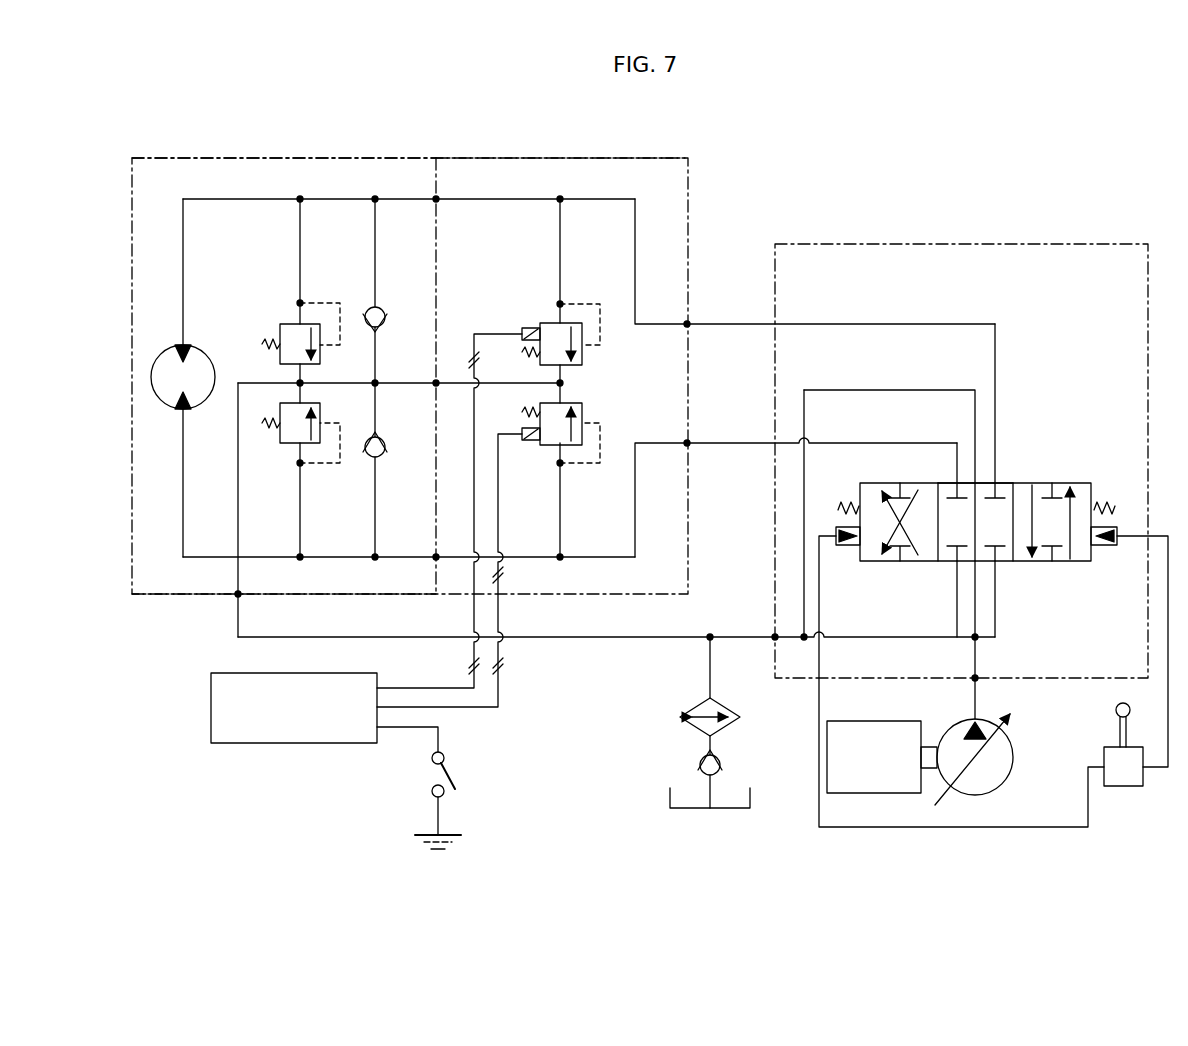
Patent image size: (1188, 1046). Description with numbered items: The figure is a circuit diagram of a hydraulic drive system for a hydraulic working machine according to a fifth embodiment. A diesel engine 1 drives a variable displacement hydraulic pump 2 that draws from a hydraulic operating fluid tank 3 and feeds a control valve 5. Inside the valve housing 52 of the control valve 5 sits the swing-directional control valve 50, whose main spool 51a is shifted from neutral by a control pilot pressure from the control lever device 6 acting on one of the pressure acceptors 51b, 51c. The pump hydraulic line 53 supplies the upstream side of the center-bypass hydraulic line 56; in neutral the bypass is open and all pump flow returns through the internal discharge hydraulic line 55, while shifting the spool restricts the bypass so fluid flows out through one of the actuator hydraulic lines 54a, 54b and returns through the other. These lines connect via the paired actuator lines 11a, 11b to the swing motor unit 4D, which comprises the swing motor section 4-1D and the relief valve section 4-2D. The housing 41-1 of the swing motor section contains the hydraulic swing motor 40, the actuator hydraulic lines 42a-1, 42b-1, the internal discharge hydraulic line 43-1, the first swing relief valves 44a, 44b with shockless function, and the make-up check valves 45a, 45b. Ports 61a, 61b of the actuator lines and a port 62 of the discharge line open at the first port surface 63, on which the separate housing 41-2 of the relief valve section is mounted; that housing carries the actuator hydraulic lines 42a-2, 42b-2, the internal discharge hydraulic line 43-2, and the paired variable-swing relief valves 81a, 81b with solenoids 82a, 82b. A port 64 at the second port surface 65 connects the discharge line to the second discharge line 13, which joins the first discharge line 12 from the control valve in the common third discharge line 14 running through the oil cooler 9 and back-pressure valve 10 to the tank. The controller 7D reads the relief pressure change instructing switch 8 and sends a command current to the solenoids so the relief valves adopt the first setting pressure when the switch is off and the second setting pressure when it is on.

The diesel engine 1 is at (893, 721).
The variable displacement hydraulic pump 2 is at (1014, 758).
The hydraulic operating fluid tank 3 is at (752, 796).
The swing motor unit 4D is at (456, 153).
The swing motor section 4-1D is at (182, 158).
The relief valve section 4-2D is at (612, 158).
The control valve 5 is at (1062, 244).
The control lever device 6 is at (1145, 782).
The controller 7D is at (315, 745).
The relief pressure change instructing switch 8 is at (450, 780).
The oil cooler 9 is at (730, 707).
The back-pressure valve 10 is at (722, 765).
The actuator line 11a is at (736, 323).
The actuator line 11b is at (736, 442).
The first discharge line 12 is at (738, 636).
The second discharge line 13 is at (394, 640).
The third discharge line 14 is at (712, 663).
The hydraulic swing motor 40 is at (200, 358).
The housing 41-1 is at (208, 193).
The housing 41-2 is at (676, 193).
The actuator hydraulic line 42a-1 is at (264, 199).
The actuator hydraulic line 42a-2 is at (462, 199).
The actuator hydraulic line 42b-1 is at (328, 558).
The actuator hydraulic line 42b-2 is at (586, 558).
The internal discharge hydraulic line 43-1 is at (240, 505).
The internal discharge hydraulic line 43-2 is at (448, 382).
The first swing relief valve 44a is at (289, 324).
The first swing relief valve 44b is at (290, 443).
The make-up check valve 45a is at (388, 320).
The make-up check valve 45b is at (388, 442).
The swing-directional control valve 50 is at (1067, 481).
The main spool 51a is at (1025, 482).
The pressure acceptor 51b is at (1107, 548).
The pressure acceptor 51c is at (844, 548).
The valve housing 52 is at (1004, 282).
The pump hydraulic line 53 is at (977, 660).
The actuator hydraulic line 54a is at (866, 324).
The actuator hydraulic line 54b is at (866, 443).
The internal discharge hydraulic line 55 is at (900, 638).
The center-bypass hydraulic line 56 is at (956, 594).
The port 61a is at (437, 201).
The port 61b is at (435, 556).
The port 62 is at (437, 387).
The first port surface 63 is at (437, 268).
The port 64 is at (240, 596).
The second port surface 65 is at (196, 598).
The variable-swing relief valve 81a is at (584, 360).
The variable-swing relief valve 81b is at (584, 410).
The solenoid 82a is at (530, 326).
The solenoid 82b is at (530, 442).